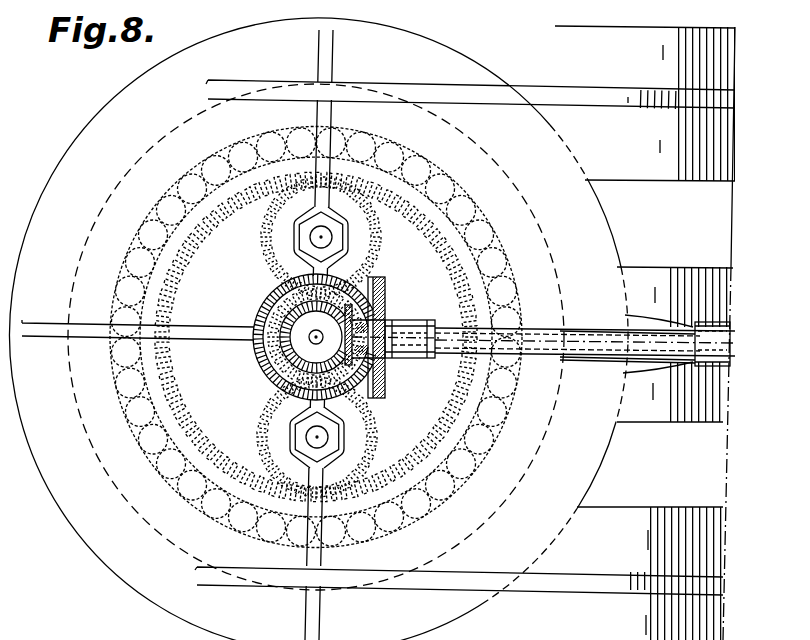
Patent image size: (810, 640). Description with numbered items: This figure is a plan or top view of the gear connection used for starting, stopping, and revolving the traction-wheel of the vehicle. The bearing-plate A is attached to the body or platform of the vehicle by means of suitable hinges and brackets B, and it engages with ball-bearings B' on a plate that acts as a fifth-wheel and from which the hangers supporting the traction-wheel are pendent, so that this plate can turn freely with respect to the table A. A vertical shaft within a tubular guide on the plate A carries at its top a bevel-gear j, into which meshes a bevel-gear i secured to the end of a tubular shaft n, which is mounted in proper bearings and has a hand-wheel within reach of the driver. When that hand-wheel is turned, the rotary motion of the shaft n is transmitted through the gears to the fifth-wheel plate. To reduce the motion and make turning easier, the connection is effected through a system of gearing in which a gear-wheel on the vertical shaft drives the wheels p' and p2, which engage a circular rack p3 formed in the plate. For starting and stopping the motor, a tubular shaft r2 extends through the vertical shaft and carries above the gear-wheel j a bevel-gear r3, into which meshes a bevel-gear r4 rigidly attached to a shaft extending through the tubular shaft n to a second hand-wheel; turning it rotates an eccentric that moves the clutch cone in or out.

The bearing-plate A is at (318, 329).
The hinges and brackets B is at (465, 333).
The ball-bearings B' is at (338, 336).
The gear-wheel p' is at (338, 163).
The gear-wheel p2 is at (378, 440).
The circular rack p3 is at (165, 308).
The tubular shaft r2 is at (312, 342).
The bevel-gear r3 is at (328, 367).
The bevel-gear r4 is at (353, 312).
The bevel-gear i is at (380, 384).
The bevel-gear j is at (267, 365).
The tubular shaft n is at (592, 340).